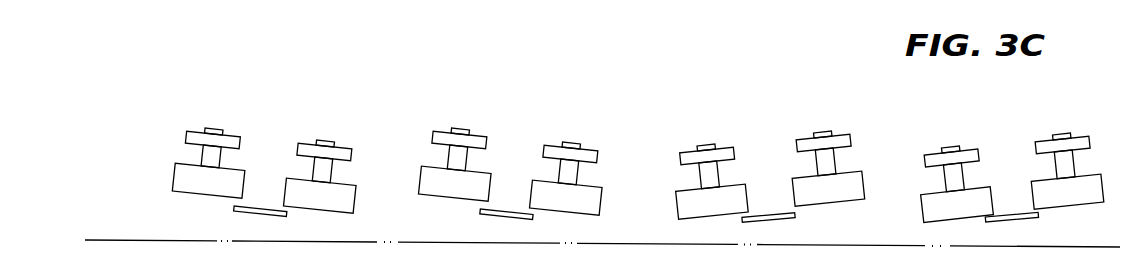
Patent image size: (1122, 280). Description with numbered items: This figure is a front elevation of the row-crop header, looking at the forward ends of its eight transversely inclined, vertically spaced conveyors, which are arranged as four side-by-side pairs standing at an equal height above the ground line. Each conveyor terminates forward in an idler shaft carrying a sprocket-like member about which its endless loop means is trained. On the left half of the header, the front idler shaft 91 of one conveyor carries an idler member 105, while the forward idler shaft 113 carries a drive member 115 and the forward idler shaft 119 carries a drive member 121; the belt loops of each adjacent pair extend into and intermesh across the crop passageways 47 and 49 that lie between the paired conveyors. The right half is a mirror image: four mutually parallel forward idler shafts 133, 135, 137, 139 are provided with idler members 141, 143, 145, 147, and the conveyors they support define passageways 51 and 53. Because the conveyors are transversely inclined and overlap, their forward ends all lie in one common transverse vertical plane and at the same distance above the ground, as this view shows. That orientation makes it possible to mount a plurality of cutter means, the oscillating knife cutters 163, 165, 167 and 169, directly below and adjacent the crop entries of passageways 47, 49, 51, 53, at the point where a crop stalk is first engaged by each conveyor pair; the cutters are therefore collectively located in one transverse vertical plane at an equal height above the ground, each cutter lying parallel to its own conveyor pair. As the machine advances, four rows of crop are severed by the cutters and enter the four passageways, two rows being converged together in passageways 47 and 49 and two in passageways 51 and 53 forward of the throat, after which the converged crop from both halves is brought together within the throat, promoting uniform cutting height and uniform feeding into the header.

The passageway 47 is at (1007, 145).
The passageway 49 is at (763, 147).
The passageway 51 is at (523, 143).
The passageway 53 is at (267, 140).
The front idler shaft 91 is at (1071, 159).
The head of element 105 is at (970, 150).
The forward idler shaft 113 is at (832, 157).
The drive member 115 is at (848, 138).
The forward idler shaft 119 is at (703, 177).
The drive member 121 is at (690, 152).
The forward idler shaft 133 is at (202, 153).
The forward idler shaft 135 is at (332, 174).
The forward idler shaft 137 is at (450, 156).
The forward idler shaft 139 is at (575, 174).
The idler member 141 is at (192, 131).
The idler member 143 is at (343, 152).
The idler member 145 is at (475, 138).
The idler member 147 is at (593, 150).
The oscillating knife cutter 163 is at (1023, 221).
The oscillating knife cutter 165 is at (783, 222).
The oscillating knife cutter 167 is at (505, 219).
The oscillating knife cutter 169 is at (265, 216).